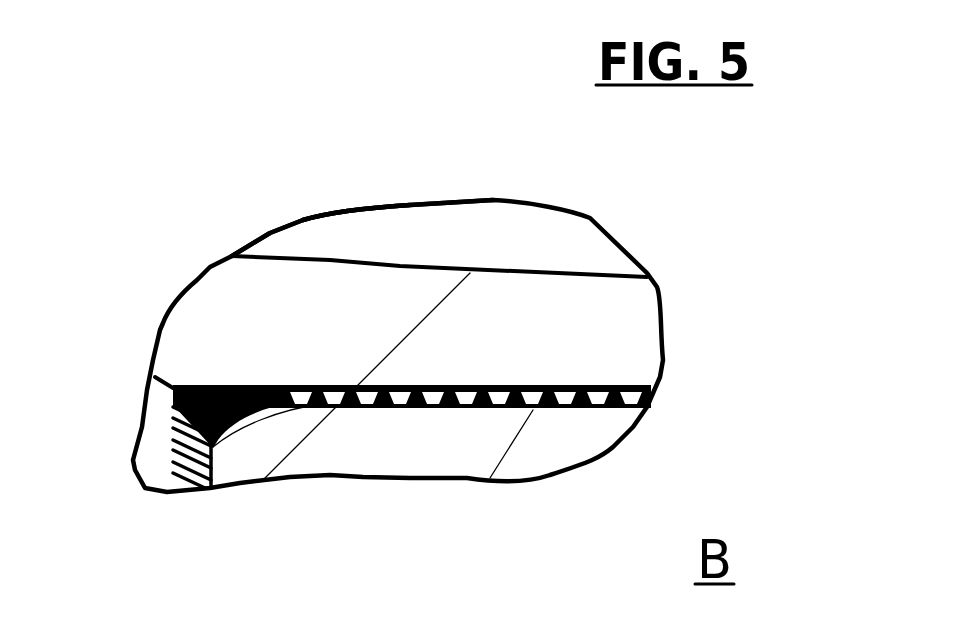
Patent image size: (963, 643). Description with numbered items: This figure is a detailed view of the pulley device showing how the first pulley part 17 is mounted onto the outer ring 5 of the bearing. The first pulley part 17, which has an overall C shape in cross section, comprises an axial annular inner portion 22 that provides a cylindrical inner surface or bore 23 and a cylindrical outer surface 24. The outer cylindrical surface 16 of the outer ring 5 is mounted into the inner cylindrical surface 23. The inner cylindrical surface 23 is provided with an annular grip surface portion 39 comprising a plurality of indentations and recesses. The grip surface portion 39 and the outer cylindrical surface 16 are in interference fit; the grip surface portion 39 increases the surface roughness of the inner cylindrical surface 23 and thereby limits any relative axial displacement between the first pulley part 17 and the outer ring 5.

The outer ring 5 is at (397, 477).
The outer cylindrical surface 16 is at (585, 400).
The first pulley part 17 is at (338, 257).
The axial annular inner portion 22 is at (440, 277).
The inner cylindrical surface 23 is at (173, 440).
The cylindrical outer surface 24 is at (286, 258).
The grip surface portion 39 is at (510, 410).